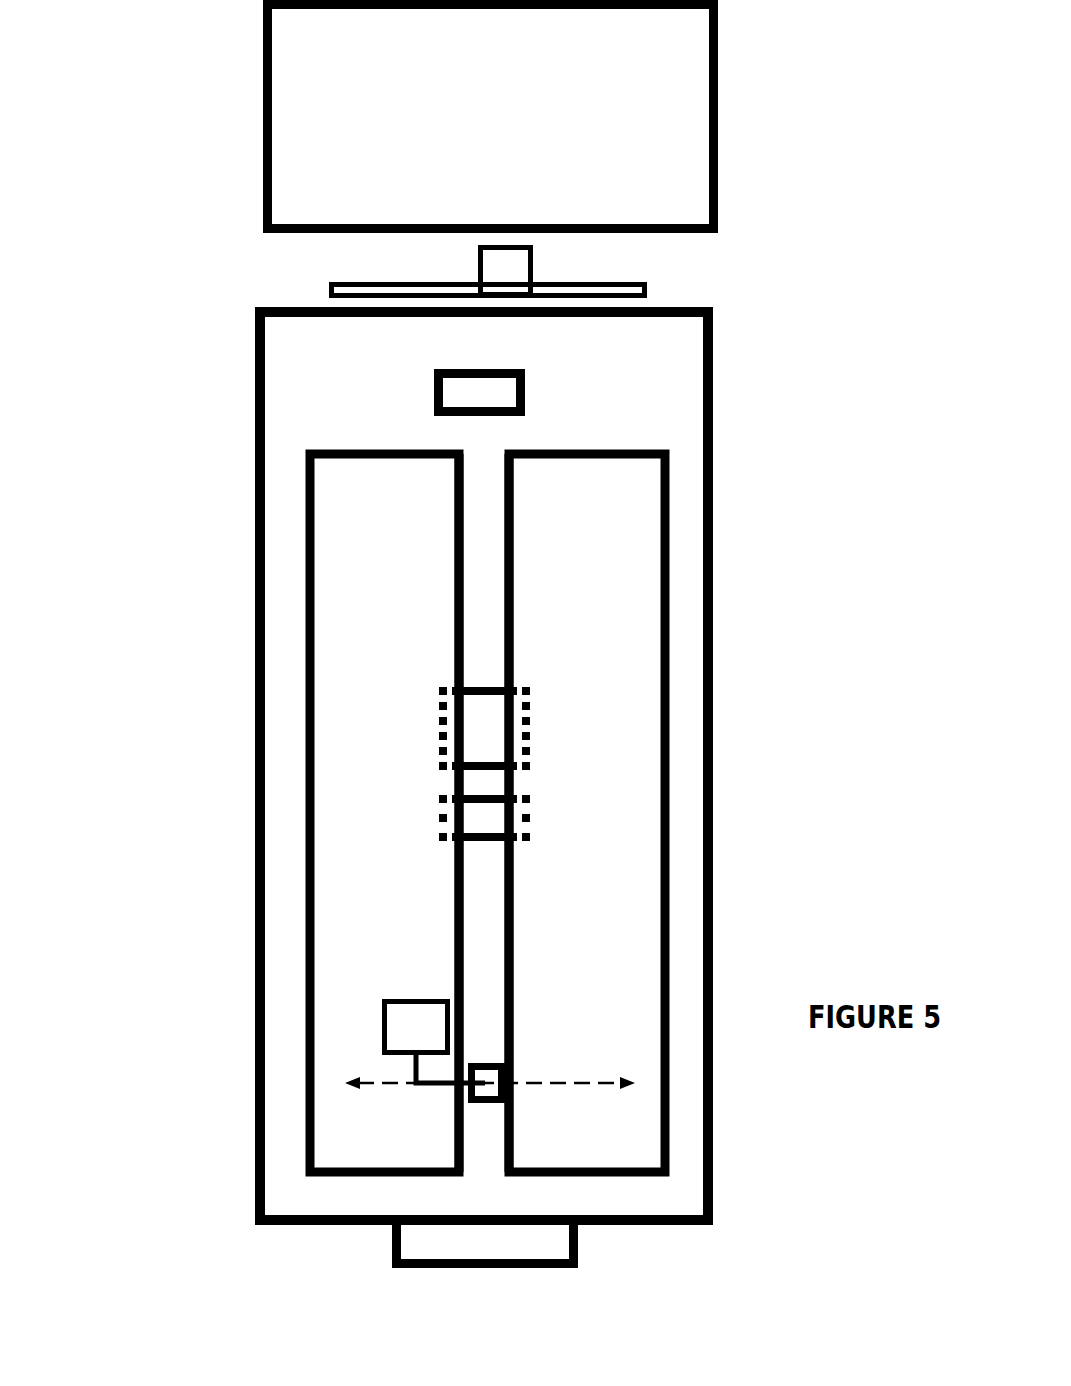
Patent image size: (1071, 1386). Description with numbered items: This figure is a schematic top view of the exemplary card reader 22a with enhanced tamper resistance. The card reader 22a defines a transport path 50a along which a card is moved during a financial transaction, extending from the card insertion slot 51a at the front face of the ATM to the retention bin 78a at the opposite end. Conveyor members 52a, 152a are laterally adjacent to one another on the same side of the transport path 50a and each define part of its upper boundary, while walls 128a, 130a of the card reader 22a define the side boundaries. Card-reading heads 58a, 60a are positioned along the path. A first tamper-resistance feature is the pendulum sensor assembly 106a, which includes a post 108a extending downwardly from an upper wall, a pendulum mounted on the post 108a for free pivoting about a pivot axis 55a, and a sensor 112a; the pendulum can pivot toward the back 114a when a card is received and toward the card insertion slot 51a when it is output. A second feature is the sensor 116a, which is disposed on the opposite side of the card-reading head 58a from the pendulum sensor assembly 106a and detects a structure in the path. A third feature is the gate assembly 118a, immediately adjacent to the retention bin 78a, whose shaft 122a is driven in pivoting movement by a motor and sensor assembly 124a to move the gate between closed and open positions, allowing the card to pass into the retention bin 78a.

The retention bin 78a is at (491, 117).
The motor and sensor assembly 124a is at (513, 267).
The shaft 122a is at (607, 293).
The back 114a is at (686, 308).
The gate assembly 118a is at (196, 262).
The card reader 22a is at (142, 440).
The card-reading head 60a is at (500, 392).
The conveyor member 52a is at (384, 813).
The conveyor member 152a is at (587, 813).
The transport path 50a is at (478, 655).
The sensor 116a is at (495, 728).
The card-reading head 58a is at (530, 818).
The wall 128a is at (256, 813).
The wall 130a is at (712, 855).
The pendulum sensor assembly 106a is at (232, 990).
The sensor 112a is at (420, 1030).
The post 108a is at (490, 1073).
The pivot axis 55a is at (590, 1085).
The card insertion slot 51a is at (413, 1240).